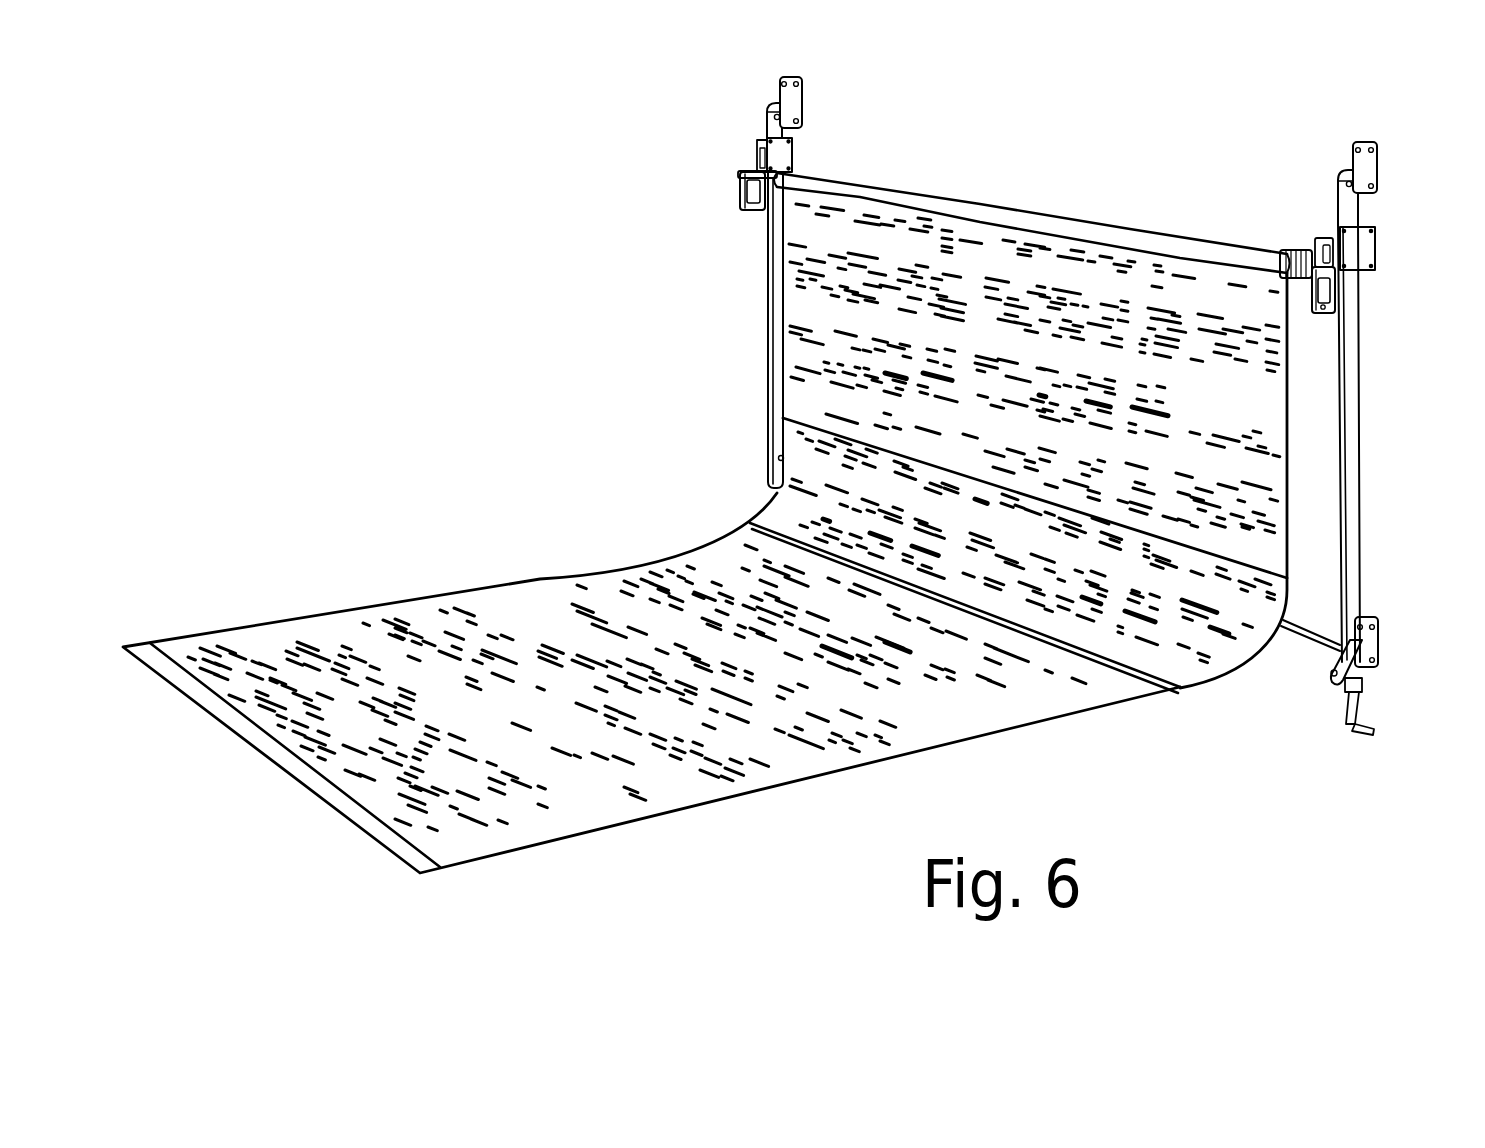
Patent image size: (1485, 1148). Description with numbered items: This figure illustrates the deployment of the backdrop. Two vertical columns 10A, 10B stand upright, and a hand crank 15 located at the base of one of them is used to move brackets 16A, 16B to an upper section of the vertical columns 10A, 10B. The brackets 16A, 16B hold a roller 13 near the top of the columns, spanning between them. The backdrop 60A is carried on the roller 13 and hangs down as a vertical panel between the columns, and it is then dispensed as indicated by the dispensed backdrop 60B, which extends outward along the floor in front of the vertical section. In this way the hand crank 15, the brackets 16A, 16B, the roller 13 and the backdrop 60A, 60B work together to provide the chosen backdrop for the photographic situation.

The backdrop 60A is at (1023, 207).
The dispensed backdrop 60B is at (798, 398).
The vertical column 10A is at (768, 353).
The vertical column 10B is at (1353, 548).
The bracket 16A is at (740, 192).
The bracket 16B is at (1313, 316).
The roller 13 is at (1340, 283).
The hand crank 15 is at (1328, 722).